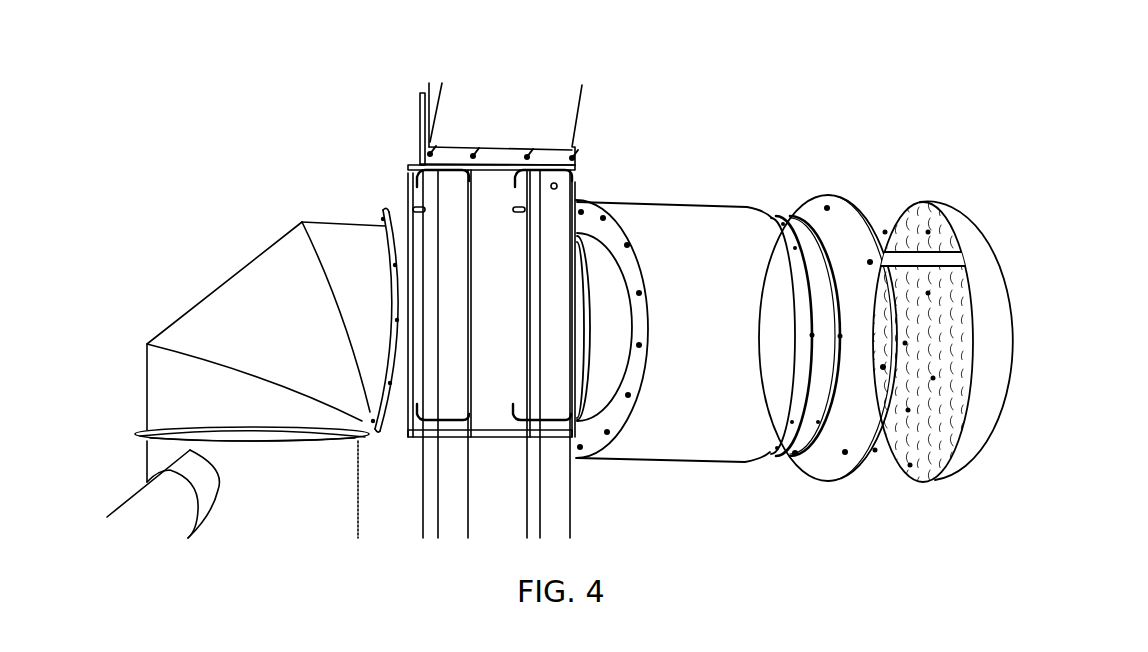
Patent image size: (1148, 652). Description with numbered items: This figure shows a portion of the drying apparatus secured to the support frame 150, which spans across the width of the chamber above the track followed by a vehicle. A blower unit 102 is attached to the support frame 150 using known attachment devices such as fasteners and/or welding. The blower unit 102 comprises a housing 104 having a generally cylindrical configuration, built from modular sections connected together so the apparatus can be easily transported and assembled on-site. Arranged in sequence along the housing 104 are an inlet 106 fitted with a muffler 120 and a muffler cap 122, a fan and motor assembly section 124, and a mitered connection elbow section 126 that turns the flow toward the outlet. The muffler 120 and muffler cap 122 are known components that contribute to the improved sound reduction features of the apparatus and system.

The blower unit 102 is at (740, 97).
The housing 104 is at (700, 463).
The inlet 106 is at (905, 198).
The muffler 120 is at (652, 188).
The muffler cap 122 is at (967, 443).
The fan and motor assembly section 124 is at (392, 428).
The mitered connection elbow section 126 is at (223, 270).
The support frame 150 is at (552, 508).